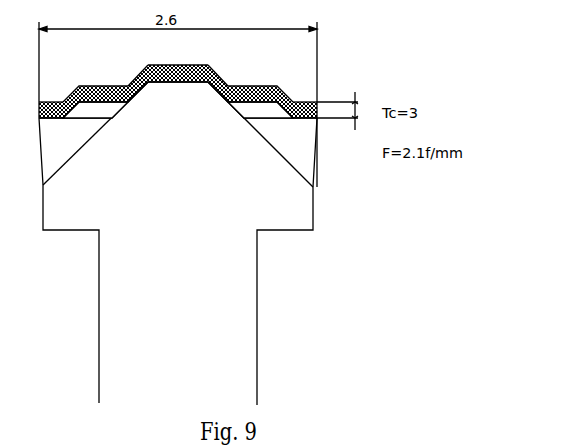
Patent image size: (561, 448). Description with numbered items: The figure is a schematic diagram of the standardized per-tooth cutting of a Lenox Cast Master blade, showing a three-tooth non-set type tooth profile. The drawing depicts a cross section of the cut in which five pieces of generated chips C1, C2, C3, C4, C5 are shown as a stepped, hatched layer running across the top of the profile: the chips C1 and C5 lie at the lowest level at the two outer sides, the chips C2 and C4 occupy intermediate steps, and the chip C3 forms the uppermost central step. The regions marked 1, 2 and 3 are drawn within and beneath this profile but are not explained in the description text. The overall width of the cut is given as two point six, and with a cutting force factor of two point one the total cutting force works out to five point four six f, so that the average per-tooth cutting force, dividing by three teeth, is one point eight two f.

The base body 1 is at (178, 243).
The sloped side portion 2 is at (178, 134).
The filler region 3 is at (178, 110).
The generated chip C1 is at (56, 106).
The generated chip C2 is at (92, 87).
The generated chip C3 is at (181, 65).
The generated chip C4 is at (254, 86).
The generated chip C5 is at (304, 99).